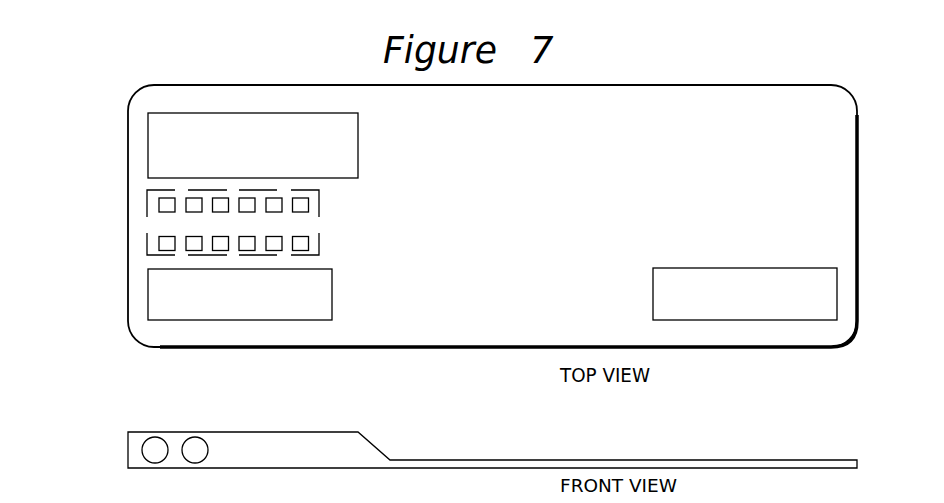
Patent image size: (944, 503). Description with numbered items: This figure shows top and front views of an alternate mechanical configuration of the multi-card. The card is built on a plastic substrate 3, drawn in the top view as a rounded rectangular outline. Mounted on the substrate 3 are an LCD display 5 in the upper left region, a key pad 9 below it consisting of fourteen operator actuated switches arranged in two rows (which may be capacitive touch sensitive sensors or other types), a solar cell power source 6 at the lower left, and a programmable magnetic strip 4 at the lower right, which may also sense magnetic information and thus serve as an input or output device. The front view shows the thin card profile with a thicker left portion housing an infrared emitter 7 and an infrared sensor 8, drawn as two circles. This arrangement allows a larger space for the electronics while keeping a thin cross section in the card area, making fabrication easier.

The plastic substrate 3 is at (146, 103).
The programmable magnetic strip 4 is at (842, 305).
The LCD display 5 is at (147, 160).
The solar cell power source 6 is at (145, 302).
The infrared emitter 7 is at (145, 436).
The infrared sensor 8 is at (208, 440).
The key pad 9 is at (145, 224).